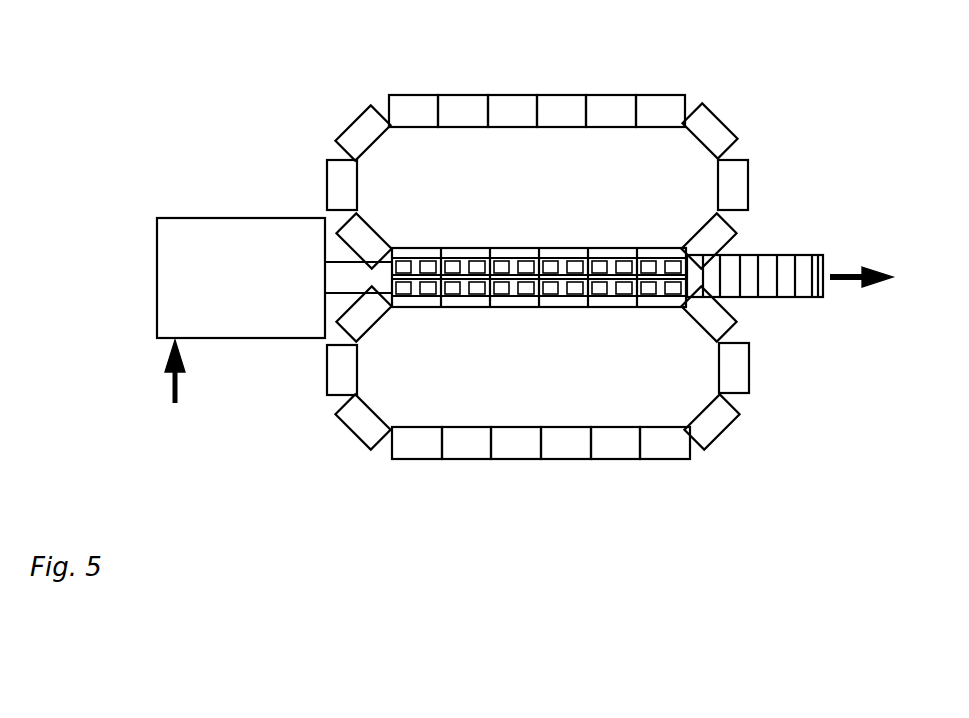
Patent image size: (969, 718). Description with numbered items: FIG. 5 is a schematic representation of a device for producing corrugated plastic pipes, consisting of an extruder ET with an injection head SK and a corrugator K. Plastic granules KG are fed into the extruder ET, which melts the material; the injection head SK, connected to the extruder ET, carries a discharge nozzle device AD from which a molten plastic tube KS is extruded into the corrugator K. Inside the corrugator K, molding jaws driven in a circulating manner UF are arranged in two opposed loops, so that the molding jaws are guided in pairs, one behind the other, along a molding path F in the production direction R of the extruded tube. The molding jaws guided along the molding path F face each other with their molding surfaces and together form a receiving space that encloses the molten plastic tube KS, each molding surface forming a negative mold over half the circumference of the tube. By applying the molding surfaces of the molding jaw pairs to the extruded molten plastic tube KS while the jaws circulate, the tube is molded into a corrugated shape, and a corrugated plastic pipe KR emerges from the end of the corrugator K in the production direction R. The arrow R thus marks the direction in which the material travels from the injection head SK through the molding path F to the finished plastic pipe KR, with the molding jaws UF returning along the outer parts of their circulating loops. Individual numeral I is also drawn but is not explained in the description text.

The corrugator K is at (318, 100).
The inductor / coil element I is at (416, 108).
The molding jaws driven in a circulating manner UF is at (682, 84).
The extruder ET is at (201, 235).
The discharge nozzle device AD is at (413, 262).
The molding path F is at (608, 258).
The molten plastic tube KS is at (428, 292).
The injection head SK is at (340, 280).
The plastic pipe KR is at (783, 296).
The production direction R is at (847, 277).
The plastic granules KG is at (175, 403).